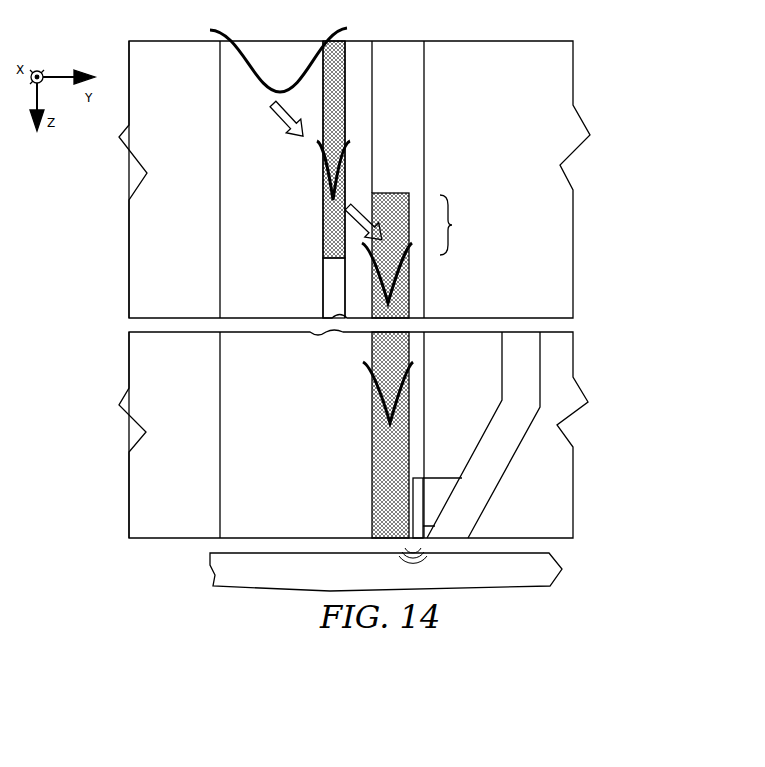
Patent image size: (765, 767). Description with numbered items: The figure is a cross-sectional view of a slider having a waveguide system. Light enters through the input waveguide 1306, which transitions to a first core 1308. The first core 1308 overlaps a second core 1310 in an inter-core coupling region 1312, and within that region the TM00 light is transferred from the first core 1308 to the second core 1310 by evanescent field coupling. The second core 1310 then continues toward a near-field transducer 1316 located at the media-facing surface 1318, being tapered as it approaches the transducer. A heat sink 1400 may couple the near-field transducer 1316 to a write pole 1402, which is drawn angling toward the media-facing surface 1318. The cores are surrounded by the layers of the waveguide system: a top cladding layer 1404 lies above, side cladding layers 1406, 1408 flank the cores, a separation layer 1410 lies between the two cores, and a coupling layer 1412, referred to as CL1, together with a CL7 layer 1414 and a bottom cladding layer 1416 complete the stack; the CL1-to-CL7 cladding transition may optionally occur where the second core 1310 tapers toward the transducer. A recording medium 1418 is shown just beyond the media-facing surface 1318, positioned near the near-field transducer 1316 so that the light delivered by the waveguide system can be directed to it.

The input waveguide 1306 is at (358, 50).
The first core 1308 is at (318, 247).
The second core 1310 is at (410, 266).
The inter-core coupling region 1312 is at (473, 225).
The near-field transducer 1316 is at (422, 474).
The media-facing surface 1318 is at (148, 541).
The heat sink 1400 is at (452, 472).
The write pole 1402 is at (488, 487).
The top cladding layer 1404 is at (563, 92).
The side cladding layer 1406 is at (407, 142).
The side cladding layer 1408 is at (332, 292).
The separation layer 1410 is at (362, 78).
The coupling layer (CL1) 1412 is at (228, 178).
The CL7 layer 1414 is at (230, 392).
The bottom cladding layer 1416 is at (140, 253).
The recording medium 1418 is at (562, 569).